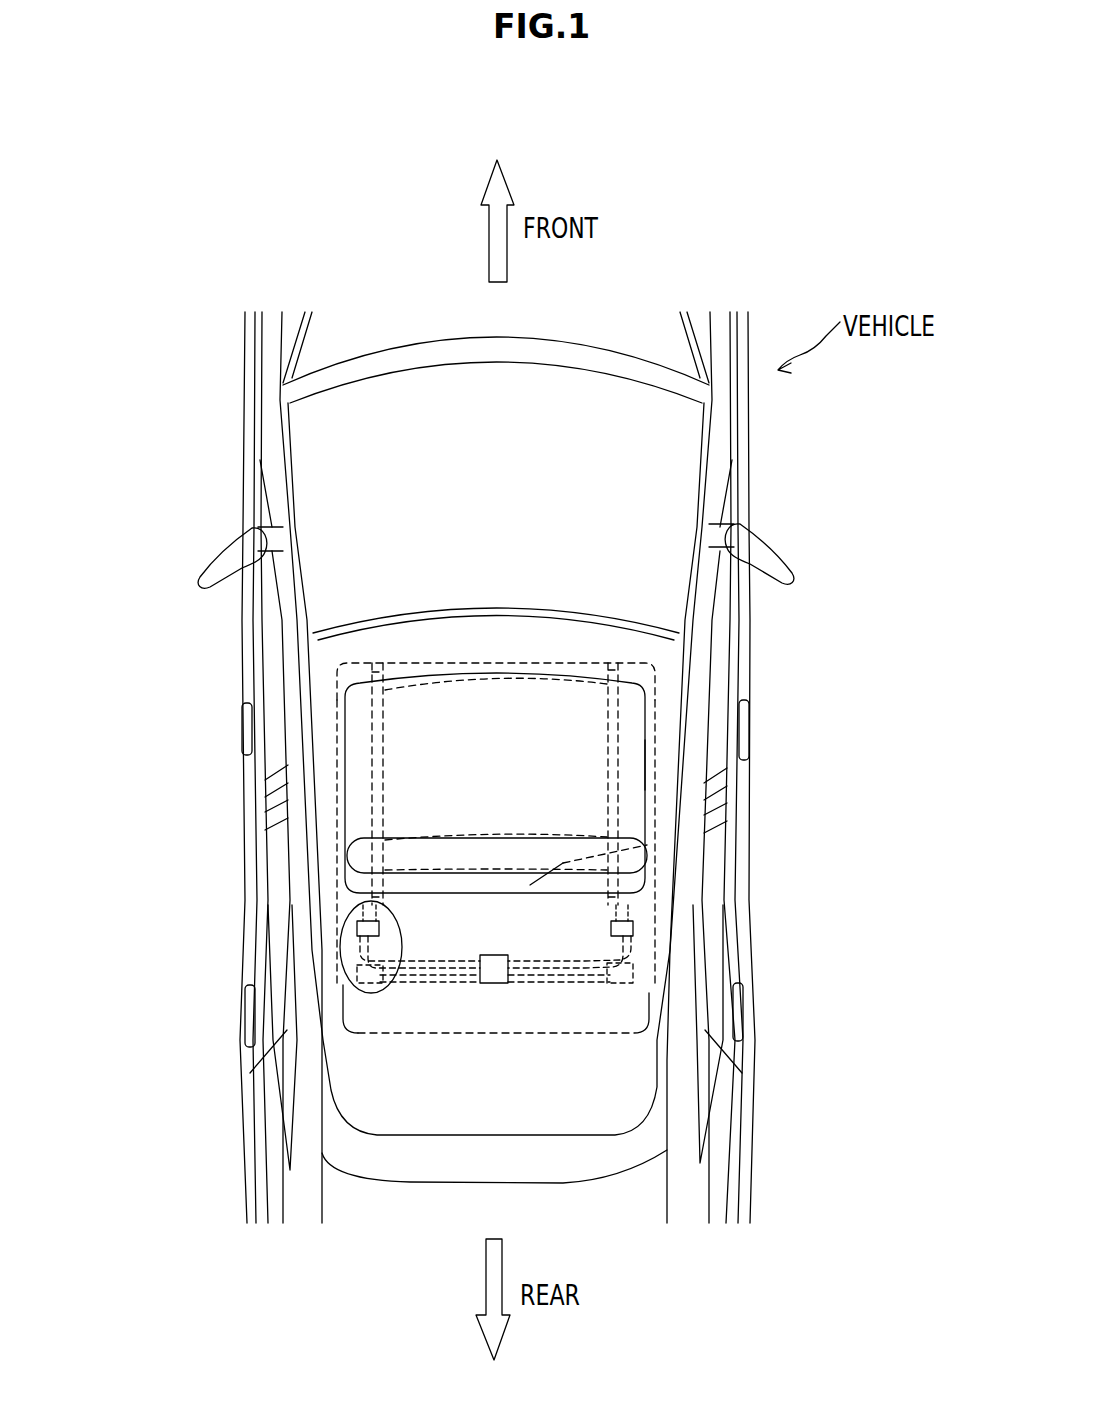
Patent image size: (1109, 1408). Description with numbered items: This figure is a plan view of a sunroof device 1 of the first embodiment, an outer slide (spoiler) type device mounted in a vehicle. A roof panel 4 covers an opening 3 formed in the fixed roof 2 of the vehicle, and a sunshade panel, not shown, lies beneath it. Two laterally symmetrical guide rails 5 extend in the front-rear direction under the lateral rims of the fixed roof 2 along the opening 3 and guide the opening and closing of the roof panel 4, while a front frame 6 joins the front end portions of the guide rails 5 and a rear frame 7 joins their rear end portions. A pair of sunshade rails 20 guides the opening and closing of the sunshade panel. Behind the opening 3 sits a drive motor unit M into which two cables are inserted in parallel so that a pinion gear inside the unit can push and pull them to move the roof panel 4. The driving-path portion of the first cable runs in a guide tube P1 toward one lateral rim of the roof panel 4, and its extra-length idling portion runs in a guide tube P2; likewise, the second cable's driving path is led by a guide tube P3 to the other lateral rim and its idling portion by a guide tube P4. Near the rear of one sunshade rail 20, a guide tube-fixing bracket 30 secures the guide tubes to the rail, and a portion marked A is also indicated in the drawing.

The sunroof device 1 is at (673, 641).
The fixed roof 2 is at (343, 730).
The opening 3 is at (505, 775).
The roof panel 4 is at (648, 767).
The guide rail 5 is at (337, 787).
The front frame 6 is at (545, 662).
The rear frame 7 is at (650, 852).
The sunshade rail 20 is at (383, 698).
The guide tube-fixing bracket 30 is at (363, 932).
The region A is at (347, 917).
The drive motor unit M is at (508, 986).
The guide tube P1 is at (343, 977).
The guide tube P2 is at (563, 977).
The guide tube P3 is at (640, 988).
The guide tube P4 is at (343, 1015).